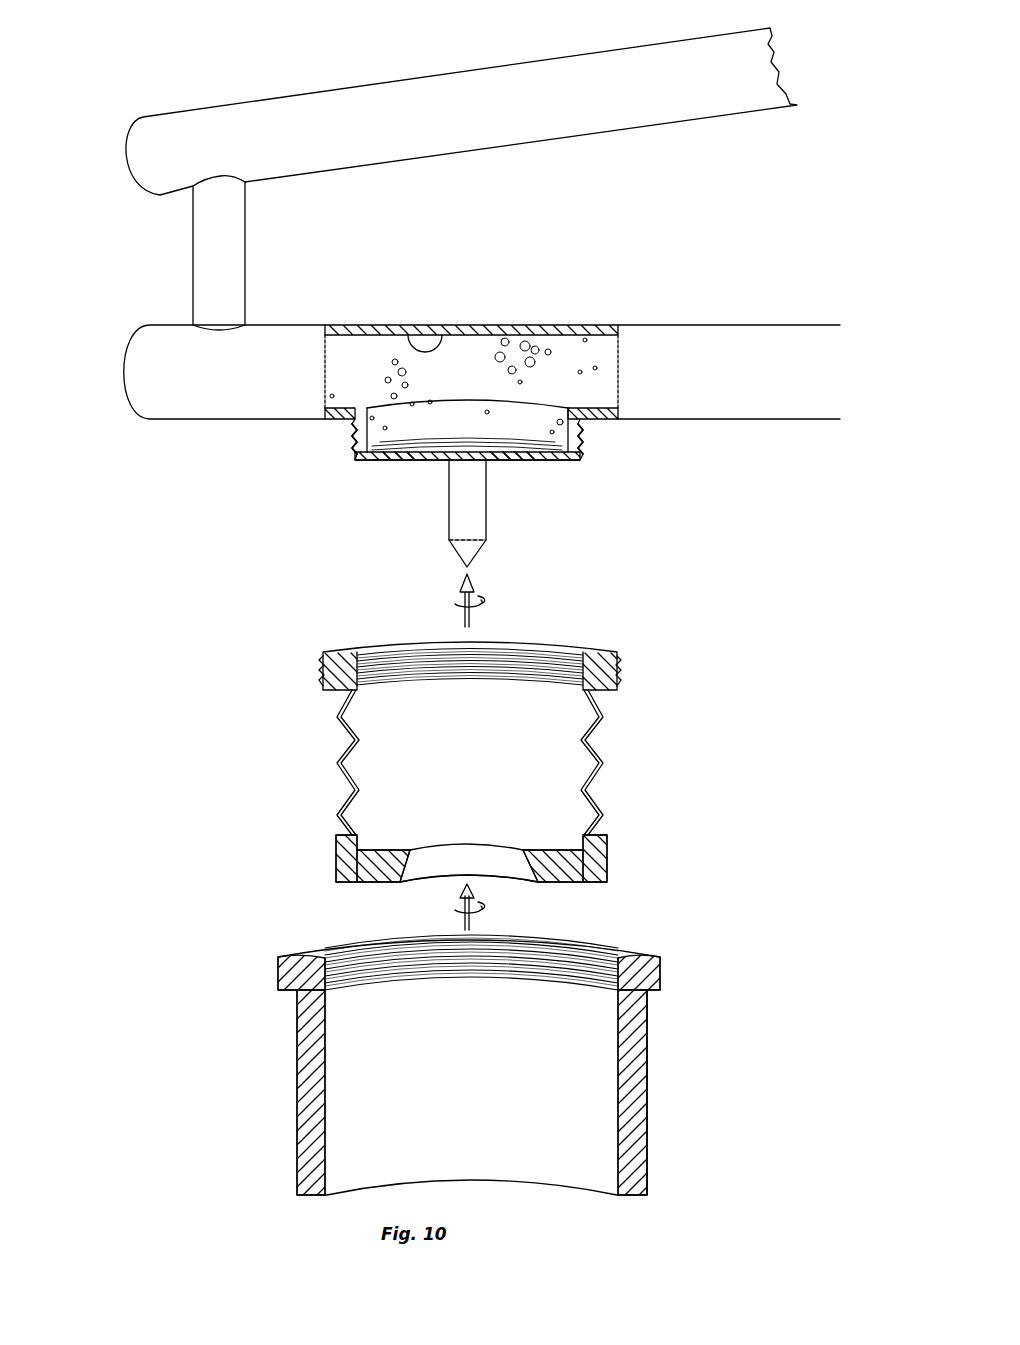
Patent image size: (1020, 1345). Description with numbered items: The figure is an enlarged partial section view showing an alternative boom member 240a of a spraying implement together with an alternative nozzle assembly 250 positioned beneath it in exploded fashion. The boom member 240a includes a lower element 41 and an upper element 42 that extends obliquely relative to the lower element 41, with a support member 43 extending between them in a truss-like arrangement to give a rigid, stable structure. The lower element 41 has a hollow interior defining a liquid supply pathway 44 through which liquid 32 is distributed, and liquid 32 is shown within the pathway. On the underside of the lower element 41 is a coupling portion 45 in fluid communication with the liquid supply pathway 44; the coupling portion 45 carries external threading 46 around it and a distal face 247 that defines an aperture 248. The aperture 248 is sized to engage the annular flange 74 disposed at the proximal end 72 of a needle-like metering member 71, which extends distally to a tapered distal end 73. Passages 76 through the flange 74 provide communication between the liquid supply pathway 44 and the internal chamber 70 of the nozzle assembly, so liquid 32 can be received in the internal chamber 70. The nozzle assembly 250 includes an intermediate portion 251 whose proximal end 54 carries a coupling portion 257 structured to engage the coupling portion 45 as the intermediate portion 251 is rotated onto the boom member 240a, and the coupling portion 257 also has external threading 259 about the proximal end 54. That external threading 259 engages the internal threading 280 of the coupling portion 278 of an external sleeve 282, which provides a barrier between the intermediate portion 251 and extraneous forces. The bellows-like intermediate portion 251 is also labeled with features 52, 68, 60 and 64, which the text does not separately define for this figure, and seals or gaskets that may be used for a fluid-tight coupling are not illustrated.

The boom member 240a is at (126, 208).
The upper element 42 is at (303, 88).
The support member 43 is at (250, 236).
The lower element 41 is at (131, 426).
The liquid supply pathway 44 is at (412, 332).
The liquid 32 is at (534, 345).
The coupling portion 45 is at (451, 476).
The external threading 46 is at (585, 440).
The annular flange 74 is at (562, 460).
The passages 76 is at (405, 463).
The proximal end 72 is at (498, 463).
The distal face 247 is at (364, 472).
The aperture 248 is at (374, 476).
The metering member 71 is at (492, 526).
The tapered distal end 73 is at (472, 570).
The nozzle assembly 250 is at (634, 610).
The intermediate portion 251 is at (294, 712).
The coupling portion 257 is at (453, 647).
The external threading 259 is at (620, 672).
The internal threading 280 is at (548, 656).
The proximal end 54 is at (620, 698).
The bellows 52 is at (492, 762).
The bellows fold 68 is at (598, 796).
The internal chamber 70 is at (380, 766).
The base 60 is at (497, 882).
The diaphragm 64 is at (430, 882).
The coupling portion 278 is at (456, 1048).
The external sleeve 282 is at (650, 1118).